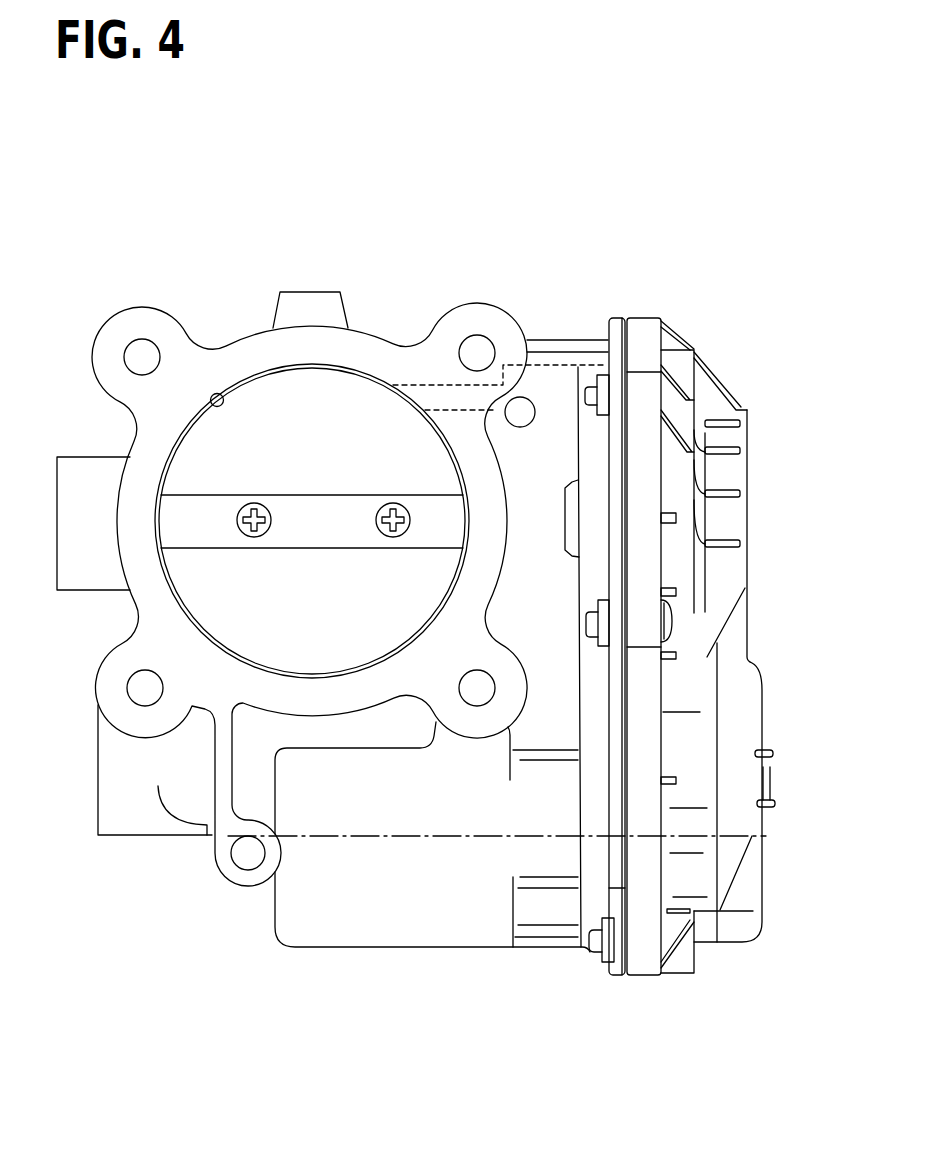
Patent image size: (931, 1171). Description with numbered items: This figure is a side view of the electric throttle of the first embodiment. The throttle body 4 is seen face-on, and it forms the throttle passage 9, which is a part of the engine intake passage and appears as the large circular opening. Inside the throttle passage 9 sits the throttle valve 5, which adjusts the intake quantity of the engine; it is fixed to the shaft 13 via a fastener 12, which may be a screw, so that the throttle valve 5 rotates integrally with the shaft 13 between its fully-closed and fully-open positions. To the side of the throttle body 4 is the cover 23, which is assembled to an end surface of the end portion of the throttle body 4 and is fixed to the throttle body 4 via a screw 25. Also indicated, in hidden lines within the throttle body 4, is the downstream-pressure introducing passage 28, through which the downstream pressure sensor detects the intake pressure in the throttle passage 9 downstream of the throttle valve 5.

The throttle body 4 is at (248, 358).
The throttle valve 5 is at (362, 400).
The throttle passage 9 is at (217, 393).
The fastener 12 is at (395, 505).
The shaft 13 is at (300, 512).
The cover 23 is at (730, 693).
The screw 25 is at (675, 622).
The downstream-pressure introducing passage 28 is at (442, 385).